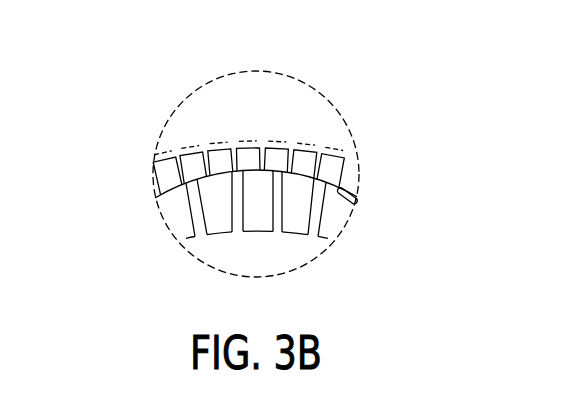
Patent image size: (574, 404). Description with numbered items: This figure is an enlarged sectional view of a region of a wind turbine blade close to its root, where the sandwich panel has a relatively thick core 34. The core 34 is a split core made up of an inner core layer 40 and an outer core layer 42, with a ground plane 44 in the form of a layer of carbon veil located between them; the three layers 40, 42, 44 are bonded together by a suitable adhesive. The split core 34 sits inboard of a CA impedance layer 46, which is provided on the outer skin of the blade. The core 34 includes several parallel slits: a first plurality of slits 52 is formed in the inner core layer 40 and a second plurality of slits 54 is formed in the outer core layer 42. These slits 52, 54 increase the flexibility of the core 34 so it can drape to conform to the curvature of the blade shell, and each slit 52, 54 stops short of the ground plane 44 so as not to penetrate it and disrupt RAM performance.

The core 34 is at (349, 247).
The inner core layer 40 is at (175, 217).
The outer core layer 42 is at (158, 183).
The ground plane 44 is at (357, 205).
The CA impedance layer 46 is at (247, 141).
The first plurality of slits 52 is at (204, 233).
The second plurality of slits 54 is at (173, 162).